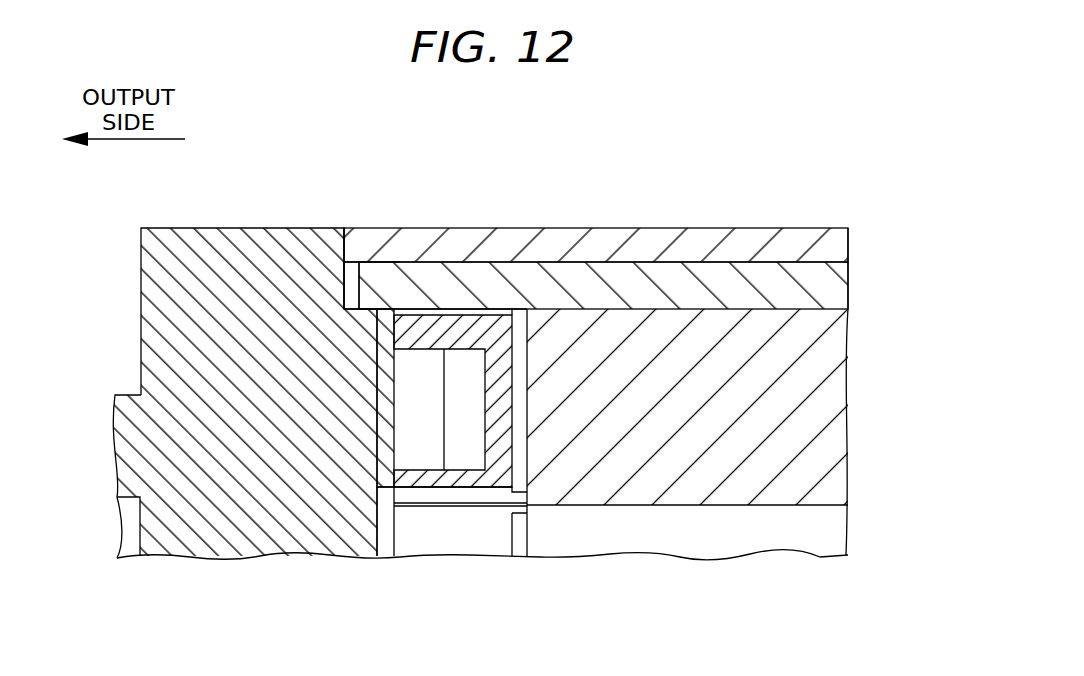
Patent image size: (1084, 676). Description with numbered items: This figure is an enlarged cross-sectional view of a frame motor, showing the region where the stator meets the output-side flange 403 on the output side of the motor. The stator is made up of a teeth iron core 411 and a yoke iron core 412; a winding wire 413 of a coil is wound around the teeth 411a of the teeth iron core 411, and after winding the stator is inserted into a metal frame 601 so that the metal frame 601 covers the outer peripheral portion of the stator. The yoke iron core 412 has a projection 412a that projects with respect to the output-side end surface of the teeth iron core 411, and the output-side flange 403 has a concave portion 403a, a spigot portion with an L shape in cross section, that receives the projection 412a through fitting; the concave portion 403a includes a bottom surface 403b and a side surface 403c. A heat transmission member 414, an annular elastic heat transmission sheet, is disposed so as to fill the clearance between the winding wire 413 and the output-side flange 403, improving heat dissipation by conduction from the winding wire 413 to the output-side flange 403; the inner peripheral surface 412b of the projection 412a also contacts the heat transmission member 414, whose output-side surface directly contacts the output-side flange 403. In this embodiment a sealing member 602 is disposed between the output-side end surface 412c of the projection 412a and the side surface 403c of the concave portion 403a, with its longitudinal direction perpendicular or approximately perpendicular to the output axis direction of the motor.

The output-side flange 403 is at (215, 257).
The concave portion 403a is at (348, 292).
The bottom surface 403b is at (354, 309).
The side surface 403c is at (343, 268).
The teeth iron core 411 is at (818, 402).
The teeth 411a is at (640, 445).
The yoke iron core 412 is at (818, 287).
The projection 412a is at (360, 285).
The inner peripheral surface 412b is at (385, 303).
The output-side end surface 412c is at (380, 278).
The winding wire 413 is at (462, 427).
The heat transmission member 414 is at (385, 425).
The metal frame 601 is at (610, 250).
The sealing member 602 is at (352, 287).